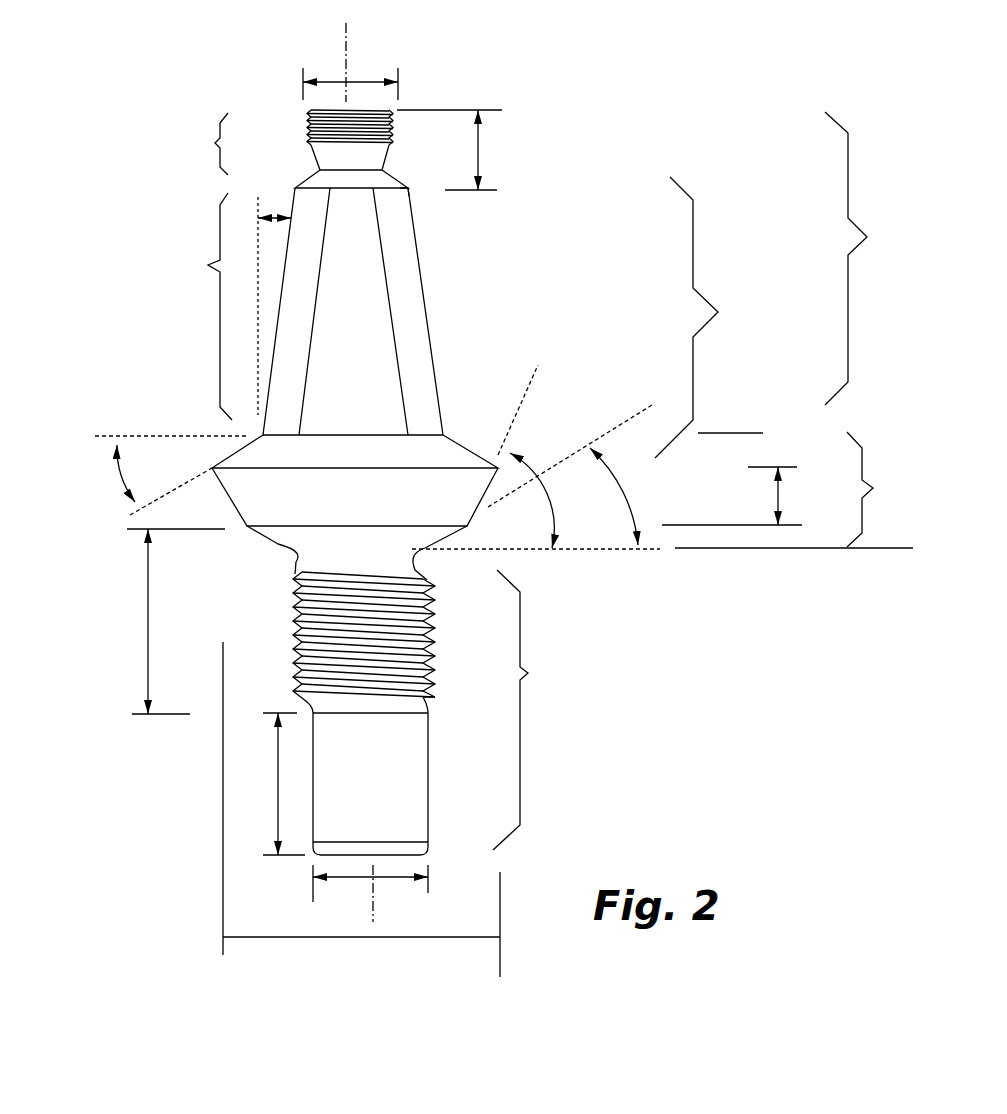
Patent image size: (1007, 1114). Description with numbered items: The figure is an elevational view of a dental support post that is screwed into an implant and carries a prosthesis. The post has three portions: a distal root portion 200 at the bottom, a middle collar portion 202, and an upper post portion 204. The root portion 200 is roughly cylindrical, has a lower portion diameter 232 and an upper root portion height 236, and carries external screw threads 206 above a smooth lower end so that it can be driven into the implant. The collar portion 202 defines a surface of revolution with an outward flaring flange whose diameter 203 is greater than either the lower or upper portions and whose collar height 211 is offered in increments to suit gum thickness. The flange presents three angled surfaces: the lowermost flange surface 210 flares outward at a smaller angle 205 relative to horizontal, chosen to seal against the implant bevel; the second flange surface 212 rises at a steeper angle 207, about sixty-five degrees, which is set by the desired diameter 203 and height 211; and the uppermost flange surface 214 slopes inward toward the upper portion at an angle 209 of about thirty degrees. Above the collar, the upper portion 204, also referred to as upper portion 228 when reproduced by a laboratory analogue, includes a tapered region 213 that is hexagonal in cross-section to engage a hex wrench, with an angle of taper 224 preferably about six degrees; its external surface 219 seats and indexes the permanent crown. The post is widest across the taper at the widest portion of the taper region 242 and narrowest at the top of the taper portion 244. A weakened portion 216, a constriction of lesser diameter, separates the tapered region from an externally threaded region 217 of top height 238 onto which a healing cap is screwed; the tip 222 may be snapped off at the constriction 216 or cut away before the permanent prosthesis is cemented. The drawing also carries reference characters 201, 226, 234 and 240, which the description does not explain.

The distal root portion 200 is at (203, 603).
The lower threaded portion 201 is at (528, 673).
The middle collar portion 202 is at (873, 488).
The diameter 203 is at (280, 938).
The upper post portion 204 is at (867, 237).
The angle 205 is at (428, 792).
The external screw threads 206 is at (430, 633).
The angle 207 is at (548, 495).
The angle 209 is at (117, 488).
The lowermost flange surface 210 is at (282, 542).
The collar height 211 is at (782, 493).
The flange surface 212 is at (232, 502).
The tapered region 213 is at (208, 265).
The uppermost flange surface 214 is at (233, 457).
The weakened portion 216 is at (385, 170).
The externally threaded region 217 is at (307, 125).
The external surface 219 is at (391, 315).
The tip 222 is at (215, 143).
The angle of taper 224 is at (266, 216).
The longitudinal axis 226 is at (347, 40).
The upper portion 228 is at (718, 312).
The lower portion diameter 232 is at (397, 880).
The shank length 234 is at (278, 768).
The upper root portion height 236 is at (150, 582).
The top height 238 is at (482, 145).
The head width dimension 240 is at (332, 82).
The widest portion of the taper region 242 is at (443, 435).
The top of the taper portion 244 is at (408, 190).